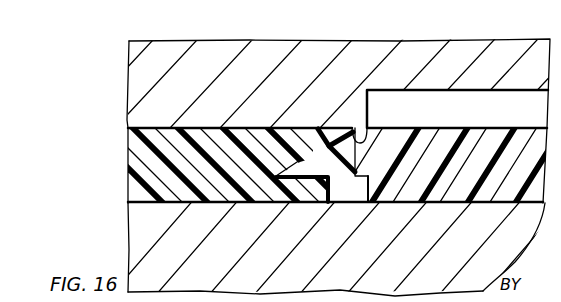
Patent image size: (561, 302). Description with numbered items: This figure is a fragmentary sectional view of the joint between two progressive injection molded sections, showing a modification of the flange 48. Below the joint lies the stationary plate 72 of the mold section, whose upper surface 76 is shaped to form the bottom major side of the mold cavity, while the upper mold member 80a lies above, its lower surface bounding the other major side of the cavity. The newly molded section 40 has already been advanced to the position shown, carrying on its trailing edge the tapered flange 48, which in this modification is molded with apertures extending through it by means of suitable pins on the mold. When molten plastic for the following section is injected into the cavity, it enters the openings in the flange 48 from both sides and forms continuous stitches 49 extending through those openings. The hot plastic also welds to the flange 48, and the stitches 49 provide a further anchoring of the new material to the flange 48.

The upper layer / substrate body 80a is at (308, 46).
The newly molded section 40 is at (473, 134).
The upper surface of plate 76 is at (202, 204).
The stitches 49 is at (314, 157).
The tapered flange 48 is at (347, 160).
The plate 72 is at (143, 231).